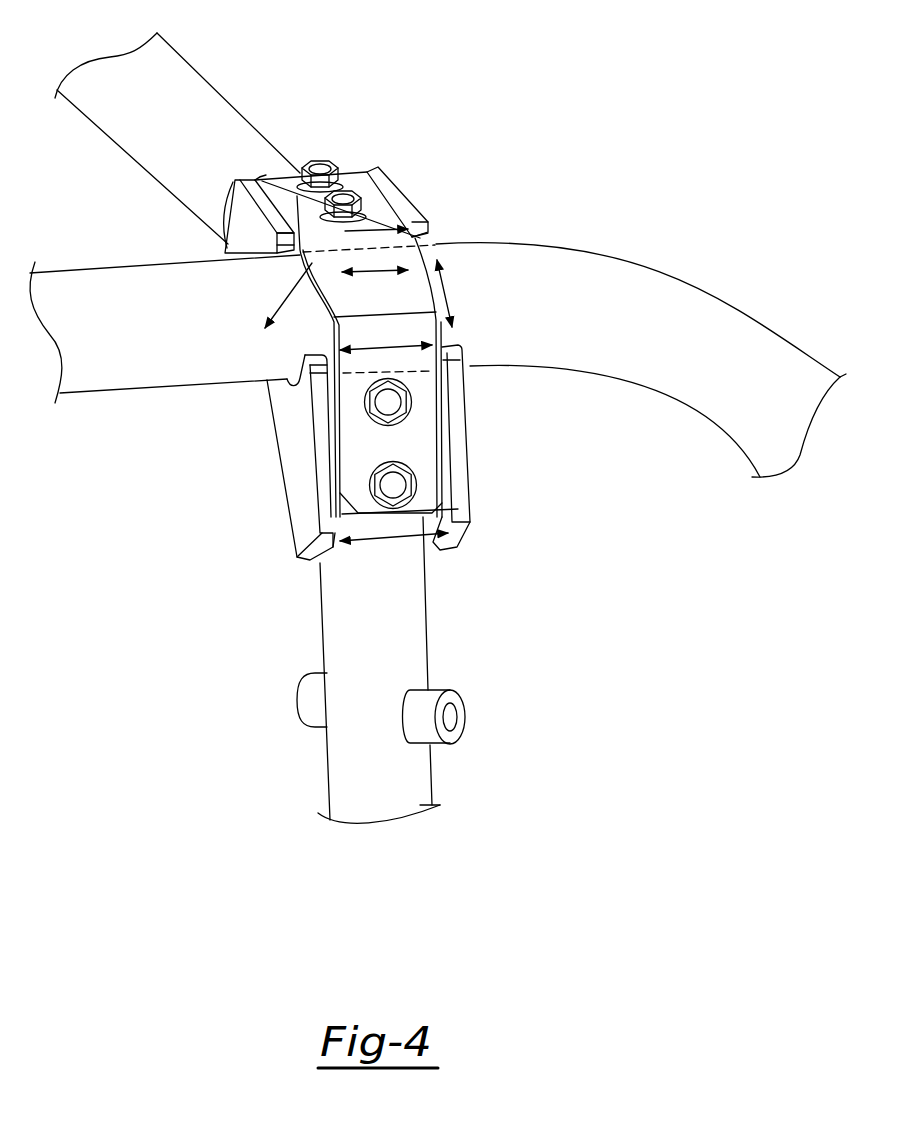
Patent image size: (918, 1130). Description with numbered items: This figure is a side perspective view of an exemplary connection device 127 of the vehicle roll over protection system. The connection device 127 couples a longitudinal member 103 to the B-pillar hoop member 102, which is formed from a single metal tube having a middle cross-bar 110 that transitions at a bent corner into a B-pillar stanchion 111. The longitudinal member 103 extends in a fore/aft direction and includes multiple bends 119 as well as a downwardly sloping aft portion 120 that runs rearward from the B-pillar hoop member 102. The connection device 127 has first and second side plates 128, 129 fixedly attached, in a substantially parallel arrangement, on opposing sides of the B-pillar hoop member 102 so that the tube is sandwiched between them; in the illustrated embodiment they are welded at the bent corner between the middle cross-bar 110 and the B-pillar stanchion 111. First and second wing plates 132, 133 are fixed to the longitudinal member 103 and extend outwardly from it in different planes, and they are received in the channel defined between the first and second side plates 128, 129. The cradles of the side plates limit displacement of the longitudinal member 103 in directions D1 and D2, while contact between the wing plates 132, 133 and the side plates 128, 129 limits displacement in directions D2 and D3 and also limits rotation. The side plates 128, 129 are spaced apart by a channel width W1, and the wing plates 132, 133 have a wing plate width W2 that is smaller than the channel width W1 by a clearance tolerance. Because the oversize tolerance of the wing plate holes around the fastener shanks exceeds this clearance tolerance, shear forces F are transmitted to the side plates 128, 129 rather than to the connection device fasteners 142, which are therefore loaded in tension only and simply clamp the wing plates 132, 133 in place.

The B-pillar hoop member 102 is at (332, 760).
The longitudinal member 103 is at (97, 290).
The middle cross-bar 110 is at (198, 110).
The B-pillar stanchion 111 is at (348, 657).
The bend 119 is at (603, 265).
The downwardly sloping aft portion 120 is at (785, 372).
The connection device 127 is at (428, 170).
The first side plate 128 is at (292, 412).
The second side plate 129 is at (460, 524).
The first wing plate 132 is at (289, 200).
The second wing plate 133 is at (357, 452).
The connection device fastener 142 is at (343, 195).
The shear forces F is at (375, 228).
The first direction D1 is at (290, 292).
The second direction D2 is at (447, 296).
The third direction D3 is at (377, 273).
The channel width W1 is at (397, 545).
The wing plate width W2 is at (387, 347).